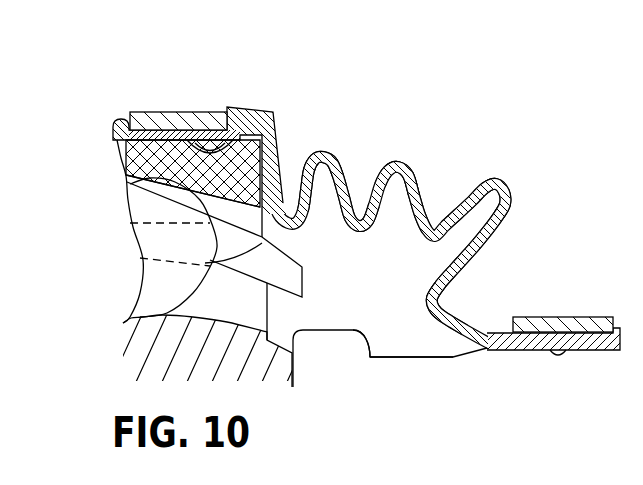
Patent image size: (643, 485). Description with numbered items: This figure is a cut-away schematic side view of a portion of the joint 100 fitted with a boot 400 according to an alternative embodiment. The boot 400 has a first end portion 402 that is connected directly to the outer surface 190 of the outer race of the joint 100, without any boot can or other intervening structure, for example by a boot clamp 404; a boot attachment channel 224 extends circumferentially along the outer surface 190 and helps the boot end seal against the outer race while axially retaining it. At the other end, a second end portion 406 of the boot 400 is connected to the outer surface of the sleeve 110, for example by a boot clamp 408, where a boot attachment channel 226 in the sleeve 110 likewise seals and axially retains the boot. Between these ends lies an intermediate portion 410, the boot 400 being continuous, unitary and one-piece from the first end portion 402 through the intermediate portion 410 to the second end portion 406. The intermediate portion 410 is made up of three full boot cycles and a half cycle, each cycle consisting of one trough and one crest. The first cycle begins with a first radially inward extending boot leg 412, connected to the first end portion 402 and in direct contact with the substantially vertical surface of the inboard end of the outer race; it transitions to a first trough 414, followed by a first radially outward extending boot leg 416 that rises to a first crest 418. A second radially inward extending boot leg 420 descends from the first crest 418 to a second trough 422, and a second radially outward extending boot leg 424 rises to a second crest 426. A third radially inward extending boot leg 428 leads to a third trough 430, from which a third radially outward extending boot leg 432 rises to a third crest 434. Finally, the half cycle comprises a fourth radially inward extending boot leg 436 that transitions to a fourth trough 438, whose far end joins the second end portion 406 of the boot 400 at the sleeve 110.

The joint 100 is at (299, 406).
The sleeve 110 is at (385, 358).
The outer surface 190 is at (125, 156).
The boot attachment channel 224 is at (132, 189).
The boot attachment channel 226 is at (563, 354).
The boot 400 is at (248, 107).
The first end portion 402 is at (173, 176).
The boot clamp 404 is at (140, 112).
The second end portion 406 is at (527, 344).
The boot clamp 408 is at (588, 317).
The intermediate portion 410 is at (393, 272).
The first radially inward extending boot leg 412 is at (261, 177).
The first trough 414 is at (240, 267).
The first radially outward extending boot leg 416 is at (312, 188).
The first crest 418 is at (316, 148).
The second radially inward extending boot leg 420 is at (343, 158).
The second trough 422 is at (362, 233).
The second radially outward extending boot leg 424 is at (394, 196).
The second crest 426 is at (401, 160).
The third radially inward extending boot leg 428 is at (418, 180).
The third trough 430 is at (478, 252).
The third radially outward extending boot leg 432 is at (463, 181).
The third crest 434 is at (508, 192).
The fourth radially inward extending boot leg 436 is at (498, 228).
The fourth trough 438 is at (427, 299).